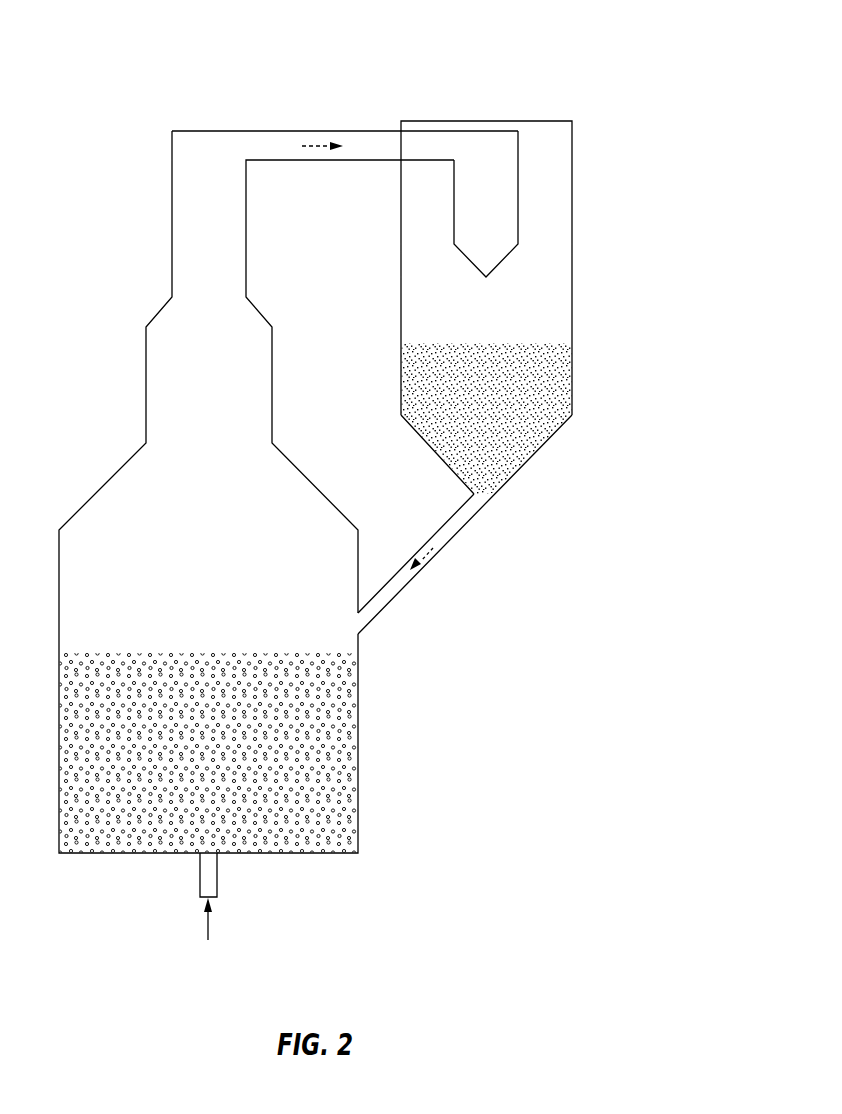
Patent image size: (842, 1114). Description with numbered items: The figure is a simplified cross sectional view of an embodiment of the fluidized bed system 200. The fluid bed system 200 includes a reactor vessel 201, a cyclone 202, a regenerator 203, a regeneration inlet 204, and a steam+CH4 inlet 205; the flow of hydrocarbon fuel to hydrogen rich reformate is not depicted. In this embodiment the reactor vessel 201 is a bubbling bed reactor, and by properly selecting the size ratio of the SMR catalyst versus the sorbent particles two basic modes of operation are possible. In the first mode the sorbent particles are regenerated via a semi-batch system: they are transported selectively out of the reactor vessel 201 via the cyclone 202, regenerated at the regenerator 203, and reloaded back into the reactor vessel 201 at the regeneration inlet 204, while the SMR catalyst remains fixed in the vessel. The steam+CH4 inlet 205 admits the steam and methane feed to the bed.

The fluidized bed system 200 is at (658, 55).
The reactor vessel 201 is at (358, 732).
The cyclone 202 is at (518, 203).
The regenerator 203 is at (545, 383).
The regeneration inlet 204 is at (428, 566).
The steam+CH4 inlet 205 is at (217, 875).